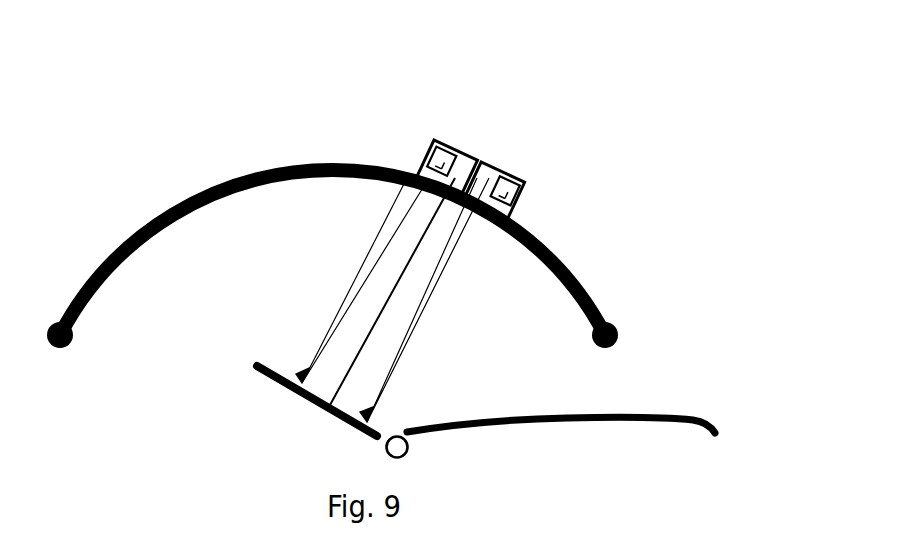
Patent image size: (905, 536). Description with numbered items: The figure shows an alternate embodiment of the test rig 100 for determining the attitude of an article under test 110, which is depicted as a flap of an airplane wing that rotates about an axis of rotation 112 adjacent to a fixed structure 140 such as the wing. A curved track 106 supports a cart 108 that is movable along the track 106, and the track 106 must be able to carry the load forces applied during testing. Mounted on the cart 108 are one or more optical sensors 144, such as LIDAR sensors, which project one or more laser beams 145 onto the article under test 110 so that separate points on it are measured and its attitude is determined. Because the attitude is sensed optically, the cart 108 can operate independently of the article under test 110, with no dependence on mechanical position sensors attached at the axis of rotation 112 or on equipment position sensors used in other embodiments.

The test rig 100 is at (458, 90).
The track 106 is at (197, 193).
The cart 108 is at (497, 163).
The article under test 110 is at (272, 382).
The axis of rotation 112 is at (405, 457).
The fixed structure 140 is at (522, 415).
The optical sensors 144 is at (500, 163).
The laser beams 145 is at (365, 275).